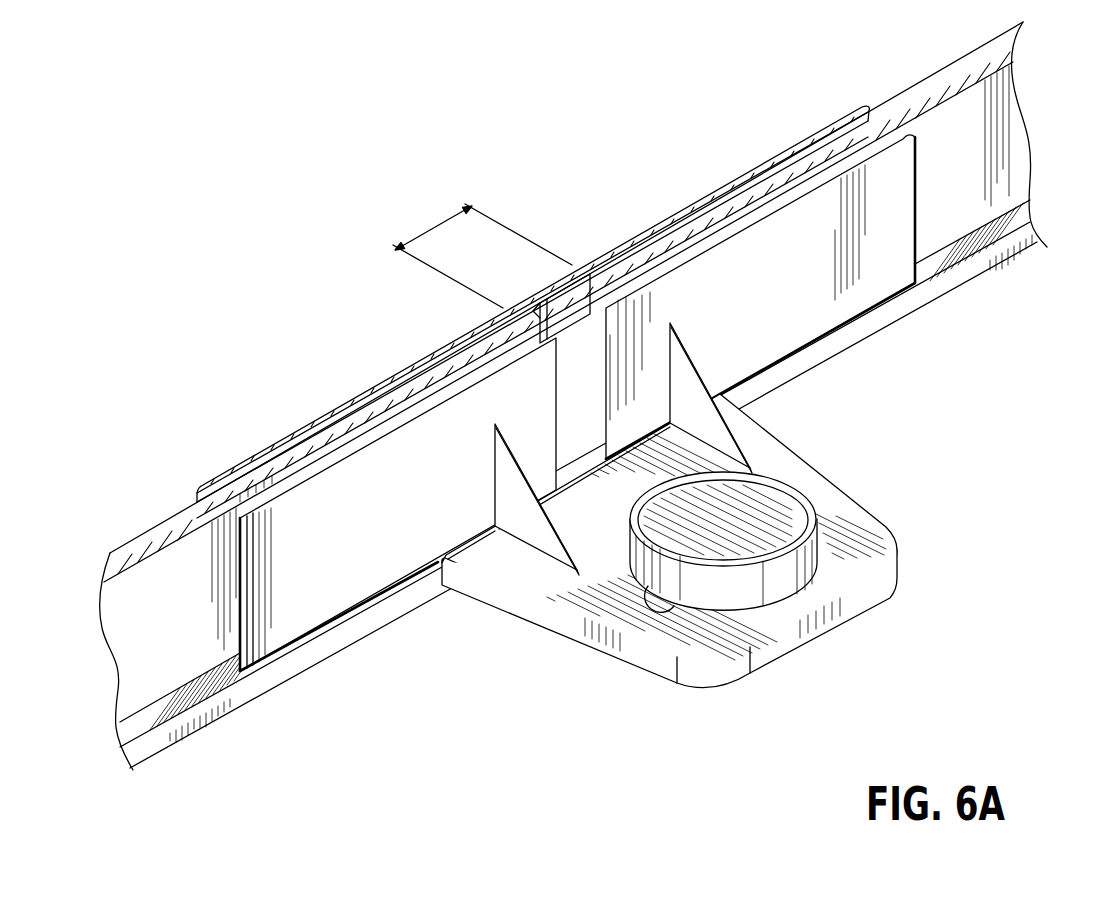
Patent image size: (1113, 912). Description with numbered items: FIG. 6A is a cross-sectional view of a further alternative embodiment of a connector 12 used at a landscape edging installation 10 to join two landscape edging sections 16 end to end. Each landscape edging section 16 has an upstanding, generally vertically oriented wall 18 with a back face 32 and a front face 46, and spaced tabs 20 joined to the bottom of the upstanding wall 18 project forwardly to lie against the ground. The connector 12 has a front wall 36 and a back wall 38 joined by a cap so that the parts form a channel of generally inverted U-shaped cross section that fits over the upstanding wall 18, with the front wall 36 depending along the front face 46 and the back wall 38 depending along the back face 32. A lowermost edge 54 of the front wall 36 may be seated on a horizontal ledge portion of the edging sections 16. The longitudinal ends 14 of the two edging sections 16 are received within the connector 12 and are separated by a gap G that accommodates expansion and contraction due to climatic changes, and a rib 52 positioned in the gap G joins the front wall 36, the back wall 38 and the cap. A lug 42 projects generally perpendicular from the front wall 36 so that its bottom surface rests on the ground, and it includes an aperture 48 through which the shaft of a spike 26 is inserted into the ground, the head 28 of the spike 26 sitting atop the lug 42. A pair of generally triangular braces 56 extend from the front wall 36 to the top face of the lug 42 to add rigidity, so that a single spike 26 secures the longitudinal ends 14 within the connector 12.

The landscape edging installation 10 is at (312, 87).
The connector 12 is at (579, 389).
The longitudinal ends 14 is at (535, 319).
The landscape edging sections 16 is at (150, 532).
The upstanding wall 18 is at (182, 631).
The tabs 20 is at (681, 505).
The spike 26 is at (714, 563).
The head 28 is at (797, 520).
The back face 32 is at (182, 516).
The front wall 36 is at (785, 293).
The back wall 38 is at (398, 543).
The lug 42 is at (832, 578).
The front face 46 is at (140, 663).
The aperture 48 is at (648, 584).
The rib 52 is at (552, 318).
The lowermost edge 54 is at (243, 669).
The braces 56 is at (502, 490).
The gap G is at (482, 256).